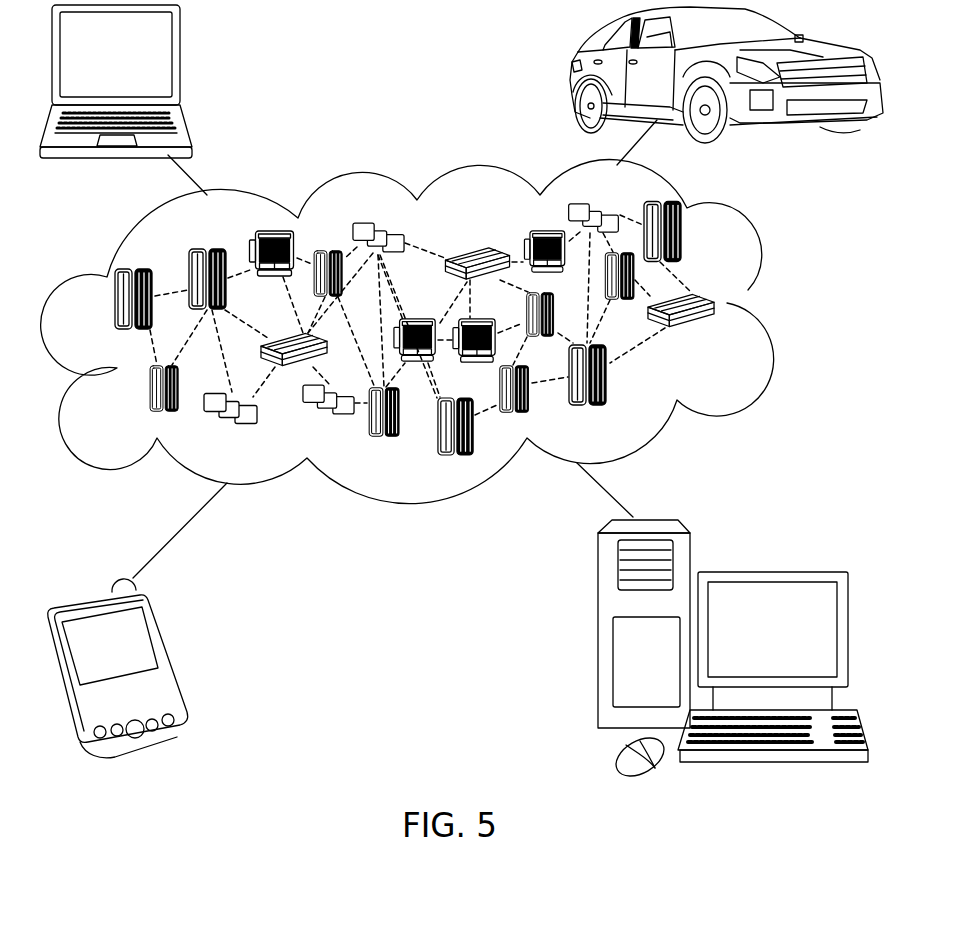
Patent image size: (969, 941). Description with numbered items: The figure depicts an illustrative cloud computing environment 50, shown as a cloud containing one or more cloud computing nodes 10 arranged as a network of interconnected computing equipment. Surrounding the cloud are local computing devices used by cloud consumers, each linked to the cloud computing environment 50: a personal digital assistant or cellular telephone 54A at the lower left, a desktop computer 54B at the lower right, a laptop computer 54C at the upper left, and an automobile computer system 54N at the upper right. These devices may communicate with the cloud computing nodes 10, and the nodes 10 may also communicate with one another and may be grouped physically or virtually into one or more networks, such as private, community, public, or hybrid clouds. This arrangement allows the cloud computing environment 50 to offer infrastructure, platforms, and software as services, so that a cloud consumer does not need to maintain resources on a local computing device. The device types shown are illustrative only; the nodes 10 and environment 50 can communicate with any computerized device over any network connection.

The cloud computing node 10 is at (722, 337).
The cloud computing environment 50 is at (433, 332).
The personal digital assistant (PDA) or cellular telephone 54A is at (170, 659).
The desktop computer 54B is at (770, 572).
The laptop computer 54C is at (181, 62).
The automobile computer system 54N is at (570, 74).